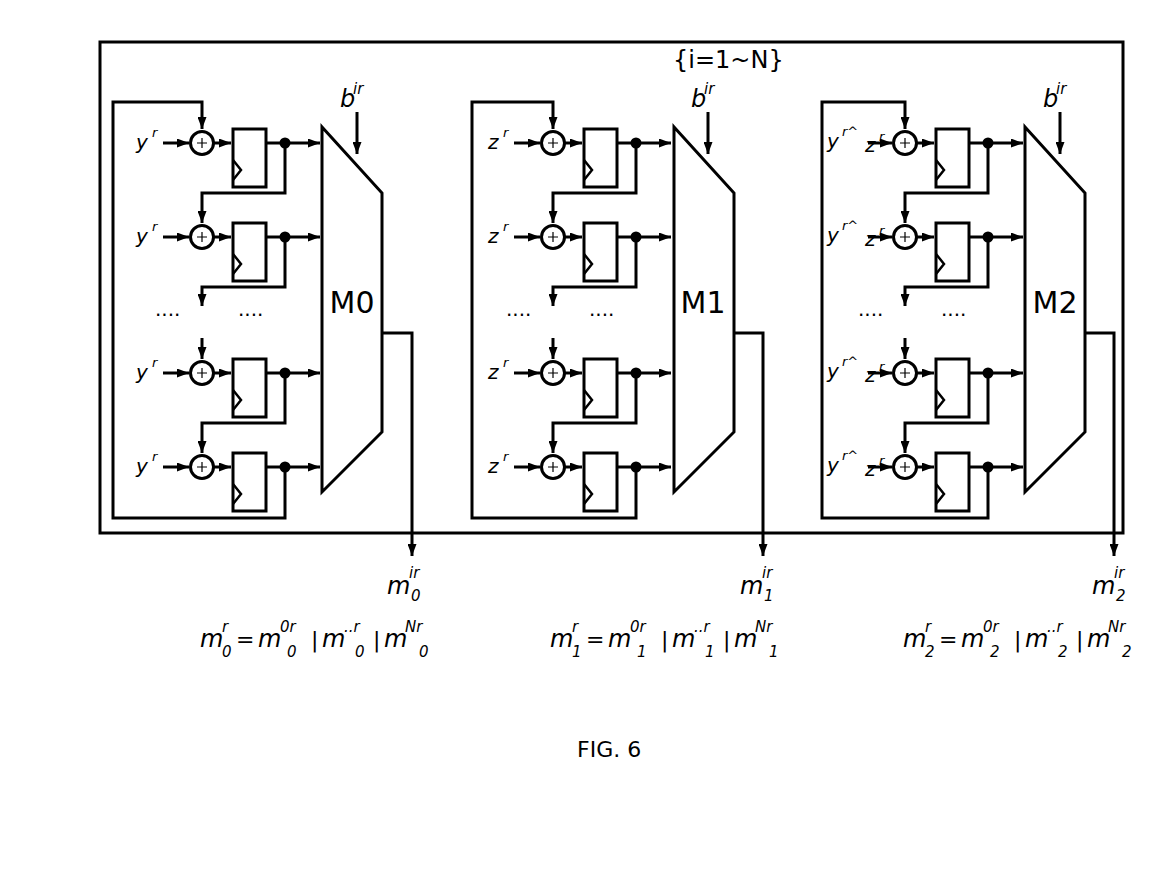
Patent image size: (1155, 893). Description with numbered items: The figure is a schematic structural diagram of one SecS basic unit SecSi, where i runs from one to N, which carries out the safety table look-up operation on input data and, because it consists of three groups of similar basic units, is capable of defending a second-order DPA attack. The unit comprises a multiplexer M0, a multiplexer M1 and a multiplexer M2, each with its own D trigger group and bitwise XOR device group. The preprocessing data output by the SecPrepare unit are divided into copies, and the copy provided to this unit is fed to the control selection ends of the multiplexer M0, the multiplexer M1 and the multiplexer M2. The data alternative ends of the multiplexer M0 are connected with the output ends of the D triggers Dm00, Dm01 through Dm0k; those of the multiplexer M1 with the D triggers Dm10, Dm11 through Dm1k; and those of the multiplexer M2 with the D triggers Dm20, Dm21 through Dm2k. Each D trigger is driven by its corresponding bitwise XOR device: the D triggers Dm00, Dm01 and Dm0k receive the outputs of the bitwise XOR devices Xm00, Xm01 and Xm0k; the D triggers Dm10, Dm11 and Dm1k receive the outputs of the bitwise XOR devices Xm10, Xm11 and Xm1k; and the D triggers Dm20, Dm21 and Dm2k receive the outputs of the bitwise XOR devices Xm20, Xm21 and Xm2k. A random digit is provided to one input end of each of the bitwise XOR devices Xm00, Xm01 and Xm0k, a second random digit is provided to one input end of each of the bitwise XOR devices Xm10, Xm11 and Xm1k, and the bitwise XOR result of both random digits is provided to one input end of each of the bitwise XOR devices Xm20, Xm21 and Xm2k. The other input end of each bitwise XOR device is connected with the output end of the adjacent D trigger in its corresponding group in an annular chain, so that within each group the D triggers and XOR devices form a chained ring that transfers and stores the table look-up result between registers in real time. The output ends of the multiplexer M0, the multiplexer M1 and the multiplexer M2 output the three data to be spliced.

The SecS basic unit SecSi is at (611, 285).
The multiplexer M0 is at (359, 309).
The multiplexer M1 is at (711, 309).
The multiplexer M2 is at (1062, 309).
The bitwise XOR device Xm00 is at (200, 155).
The bitwise XOR device Xm01 is at (200, 249).
The bitwise XOR device Xm0k is at (200, 479).
The bitwise XOR device Xm10 is at (551, 155).
The bitwise XOR device Xm11 is at (551, 249).
The bitwise XOR device Xm1k is at (551, 479).
The bitwise XOR device Xm20 is at (903, 155).
The bitwise XOR device Xm21 is at (903, 249).
The bitwise XOR device Xm2k is at (903, 479).
The D trigger Dm00 is at (250, 146).
The D trigger Dm01 is at (250, 240).
The D trigger Dm0k is at (250, 470).
The D trigger Dm10 is at (601, 146).
The D trigger Dm11 is at (601, 240).
The D trigger Dm1k is at (601, 470).
The D trigger Dm20 is at (953, 146).
The D trigger Dm21 is at (953, 240).
The D trigger Dm2k is at (953, 470).